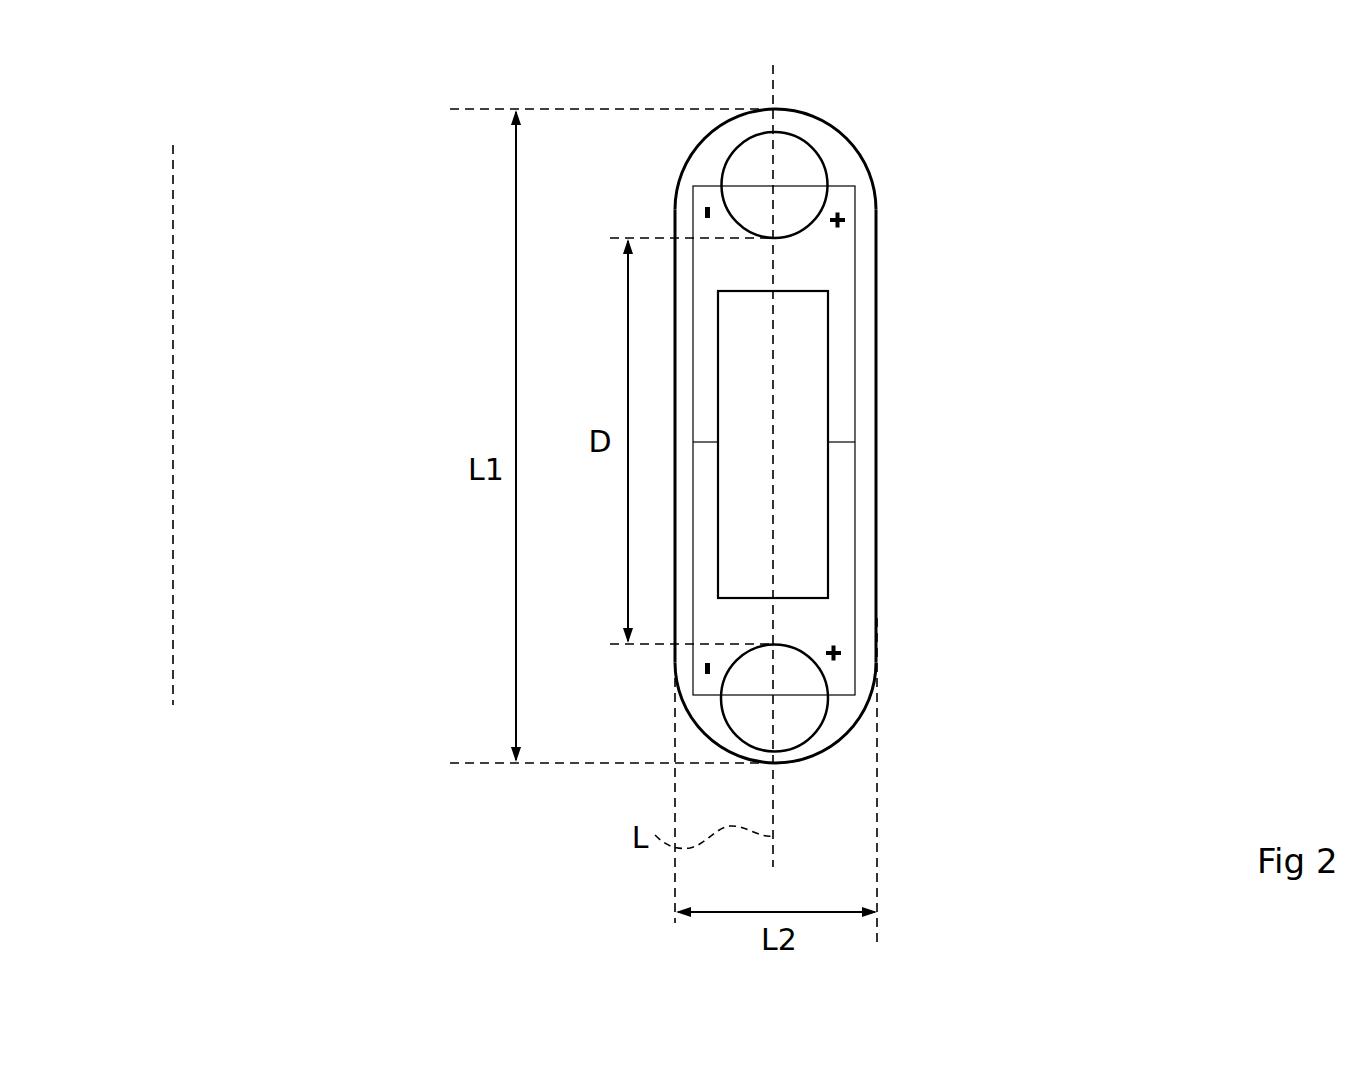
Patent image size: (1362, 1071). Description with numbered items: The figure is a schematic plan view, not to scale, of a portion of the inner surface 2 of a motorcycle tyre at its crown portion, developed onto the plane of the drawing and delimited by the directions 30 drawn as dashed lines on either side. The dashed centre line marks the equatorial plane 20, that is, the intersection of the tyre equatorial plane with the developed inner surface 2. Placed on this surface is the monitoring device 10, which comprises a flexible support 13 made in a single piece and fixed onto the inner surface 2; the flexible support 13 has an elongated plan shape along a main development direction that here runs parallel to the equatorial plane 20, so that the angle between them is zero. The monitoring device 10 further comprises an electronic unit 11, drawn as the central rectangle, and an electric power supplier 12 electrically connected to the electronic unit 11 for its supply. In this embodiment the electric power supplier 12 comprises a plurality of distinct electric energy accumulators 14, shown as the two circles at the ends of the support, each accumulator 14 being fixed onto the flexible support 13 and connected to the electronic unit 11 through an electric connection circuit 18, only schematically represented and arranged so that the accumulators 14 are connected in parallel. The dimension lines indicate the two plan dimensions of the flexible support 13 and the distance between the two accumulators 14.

The inner surface 2 is at (1100, 417).
The monitoring device 10 is at (876, 420).
The electronic unit 11 is at (782, 540).
The electric power supplier 12 is at (748, 130).
The flexible support 13 is at (876, 522).
The electric energy accumulator 14 is at (787, 193).
The electric connection circuit 18 is at (880, 455).
The equatorial plane 20 is at (772, 87).
The directions 30 is at (173, 228).